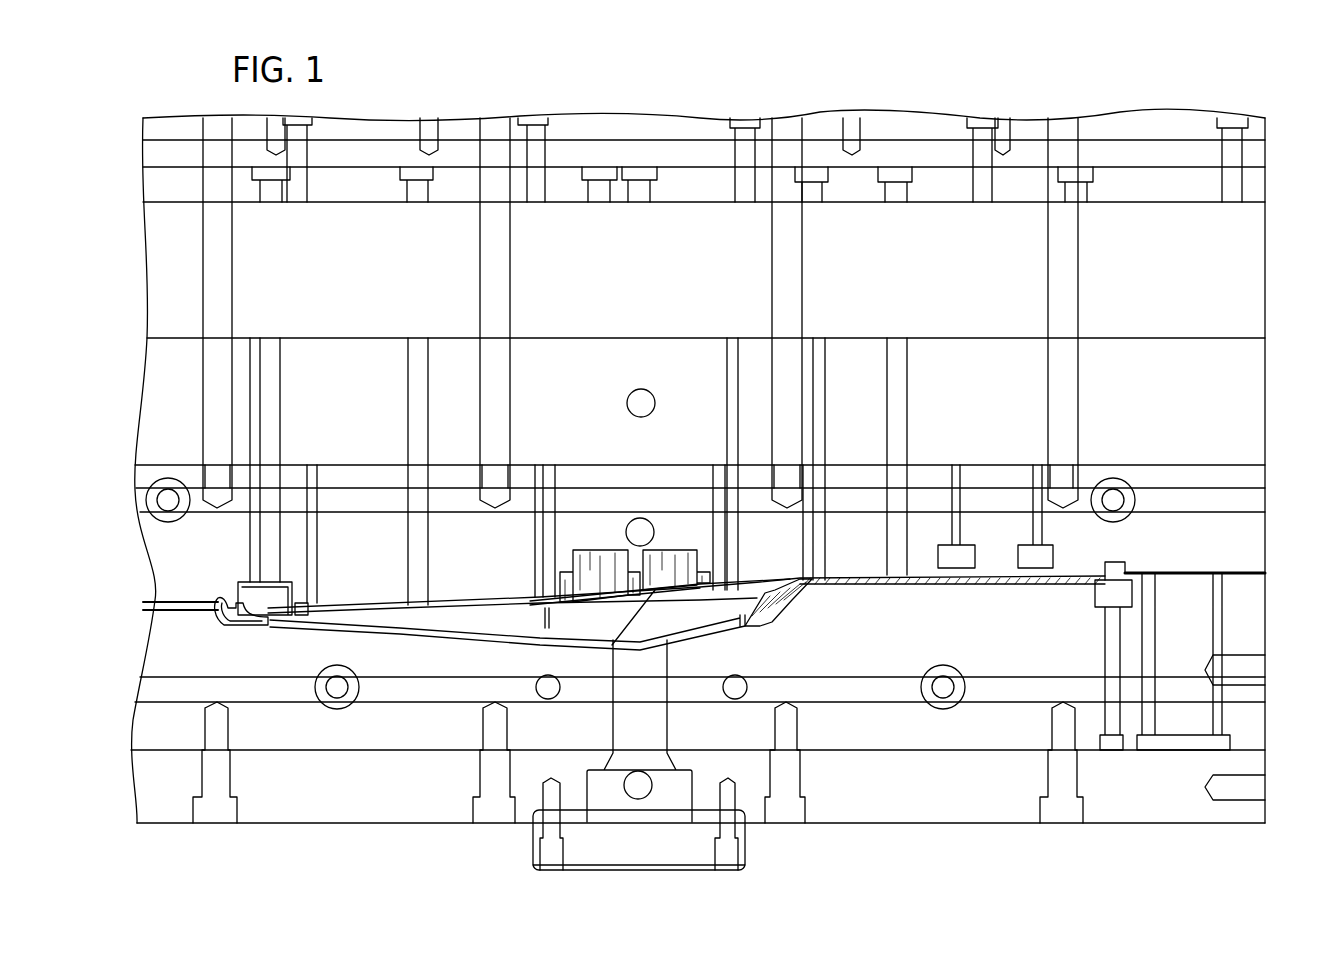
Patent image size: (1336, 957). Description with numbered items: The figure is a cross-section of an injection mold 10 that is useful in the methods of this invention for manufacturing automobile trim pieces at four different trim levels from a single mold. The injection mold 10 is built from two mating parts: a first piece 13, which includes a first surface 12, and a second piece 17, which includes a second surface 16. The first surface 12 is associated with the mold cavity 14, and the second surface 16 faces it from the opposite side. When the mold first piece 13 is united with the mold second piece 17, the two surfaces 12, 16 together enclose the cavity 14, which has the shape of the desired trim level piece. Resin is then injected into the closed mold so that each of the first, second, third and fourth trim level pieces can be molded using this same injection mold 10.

The injection mold 10 is at (1283, 130).
The first surface 12 is at (747, 627).
The first piece 13 is at (1250, 625).
The mold cavity 14 is at (437, 640).
The second surface 16 is at (358, 607).
The second piece 17 is at (1268, 400).